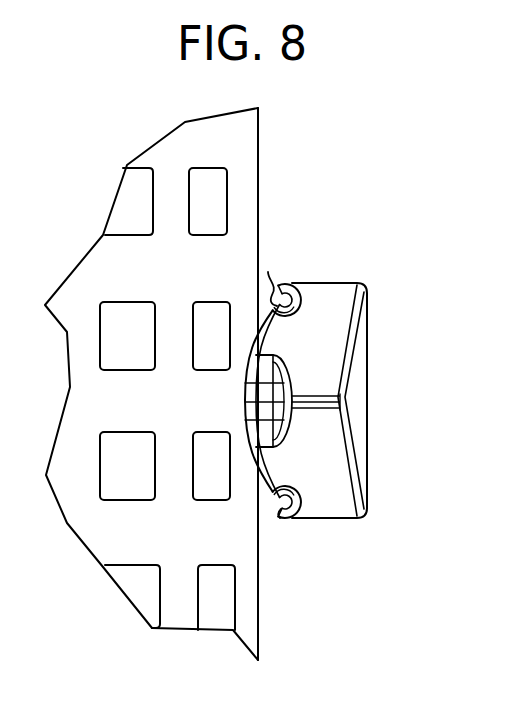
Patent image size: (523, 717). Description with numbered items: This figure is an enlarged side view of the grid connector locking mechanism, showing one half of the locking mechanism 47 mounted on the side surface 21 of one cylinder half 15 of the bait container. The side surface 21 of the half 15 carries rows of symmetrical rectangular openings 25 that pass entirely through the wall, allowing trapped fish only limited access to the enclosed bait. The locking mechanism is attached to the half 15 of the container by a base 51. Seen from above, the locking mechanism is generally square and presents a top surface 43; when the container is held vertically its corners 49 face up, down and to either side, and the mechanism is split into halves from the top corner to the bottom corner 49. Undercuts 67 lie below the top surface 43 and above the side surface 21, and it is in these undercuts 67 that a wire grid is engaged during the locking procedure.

The half 15 is at (281, 150).
The side surface 21 is at (245, 208).
The openings 25 is at (200, 333).
The top surface 43 is at (362, 448).
The half of the locking mechanism 47 is at (317, 358).
The corners 49 is at (322, 283).
The base 51 is at (262, 397).
The undercuts 67 is at (268, 272).